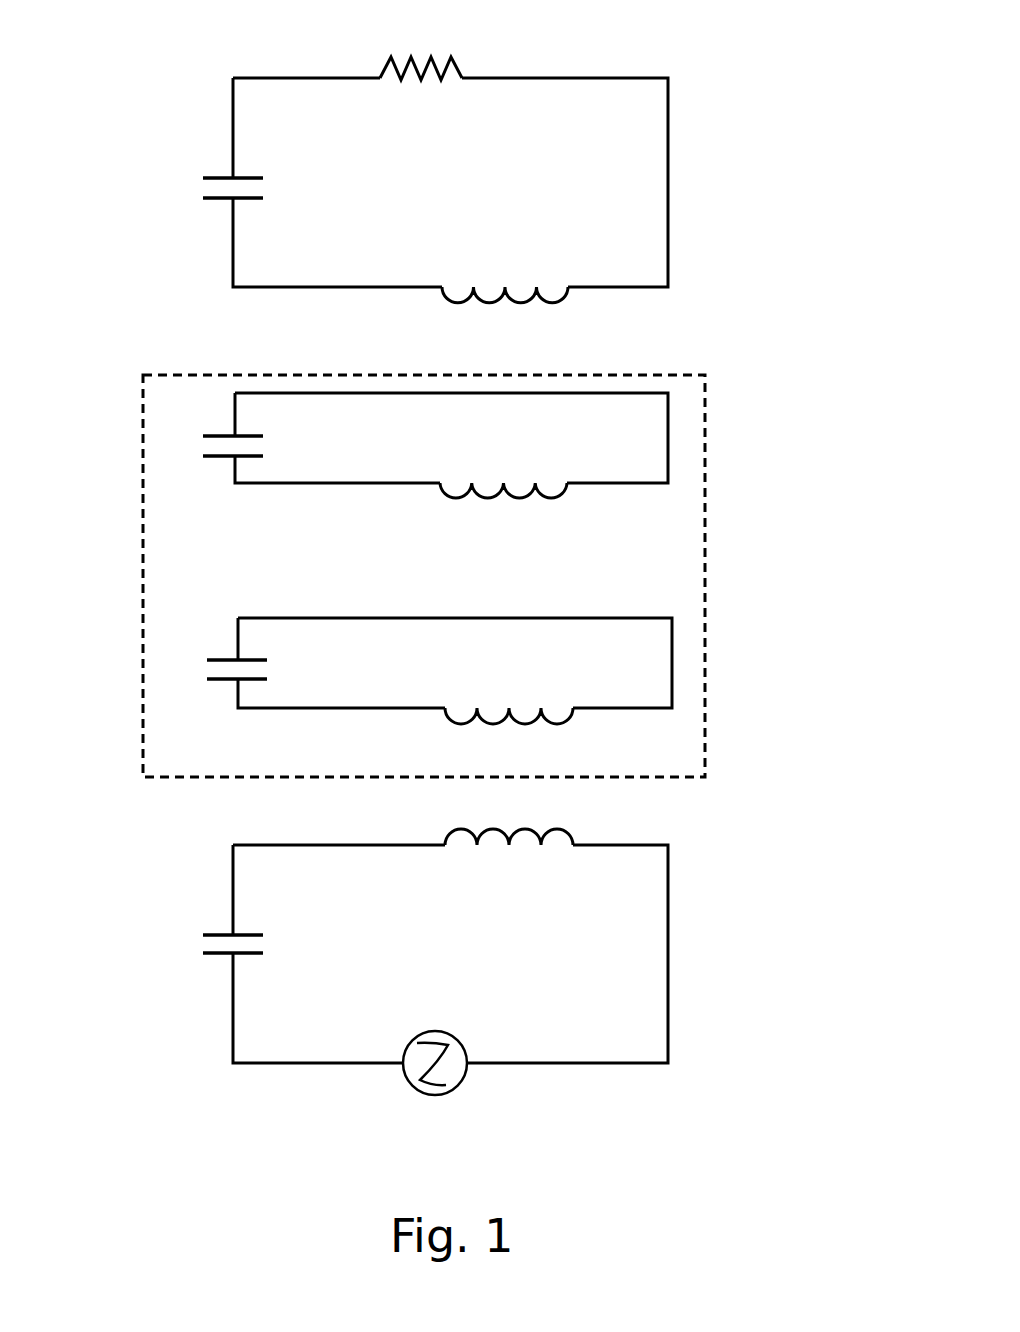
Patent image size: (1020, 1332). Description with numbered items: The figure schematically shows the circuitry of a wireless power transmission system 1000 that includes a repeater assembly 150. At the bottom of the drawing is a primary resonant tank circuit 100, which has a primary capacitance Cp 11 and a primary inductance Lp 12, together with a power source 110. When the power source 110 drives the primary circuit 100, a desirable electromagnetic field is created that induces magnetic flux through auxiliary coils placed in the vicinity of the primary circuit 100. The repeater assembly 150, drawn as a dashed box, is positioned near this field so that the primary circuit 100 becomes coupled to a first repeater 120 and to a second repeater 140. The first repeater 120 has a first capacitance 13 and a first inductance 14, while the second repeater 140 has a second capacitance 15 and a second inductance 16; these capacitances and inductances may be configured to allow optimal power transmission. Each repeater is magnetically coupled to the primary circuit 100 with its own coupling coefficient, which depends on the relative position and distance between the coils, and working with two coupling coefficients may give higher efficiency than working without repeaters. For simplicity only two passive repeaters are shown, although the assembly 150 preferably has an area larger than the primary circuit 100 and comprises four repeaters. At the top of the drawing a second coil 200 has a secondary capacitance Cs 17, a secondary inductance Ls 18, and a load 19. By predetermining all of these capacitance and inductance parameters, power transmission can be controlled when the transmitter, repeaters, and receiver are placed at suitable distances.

The wireless power transmission system 1000 is at (112, 1057).
The primary resonant tank circuit 100 is at (367, 974).
The power source 110 is at (467, 1075).
The primary capacitance Cp 11 is at (222, 955).
The primary inductance Lp 12 is at (573, 831).
The repeater assembly 150 is at (706, 748).
The first repeater 120 is at (464, 669).
The first capacitance C1 13 is at (222, 682).
The first inductance L1 14 is at (573, 719).
The second repeater 140 is at (459, 447).
The second capacitance C2 15 is at (215, 462).
The second inductance L2 16 is at (567, 493).
The second coil 200 is at (372, 194).
The secondary capacitance Cs 17 is at (218, 205).
The secondary inductance Ls 18 is at (567, 297).
The load 19 is at (428, 60).